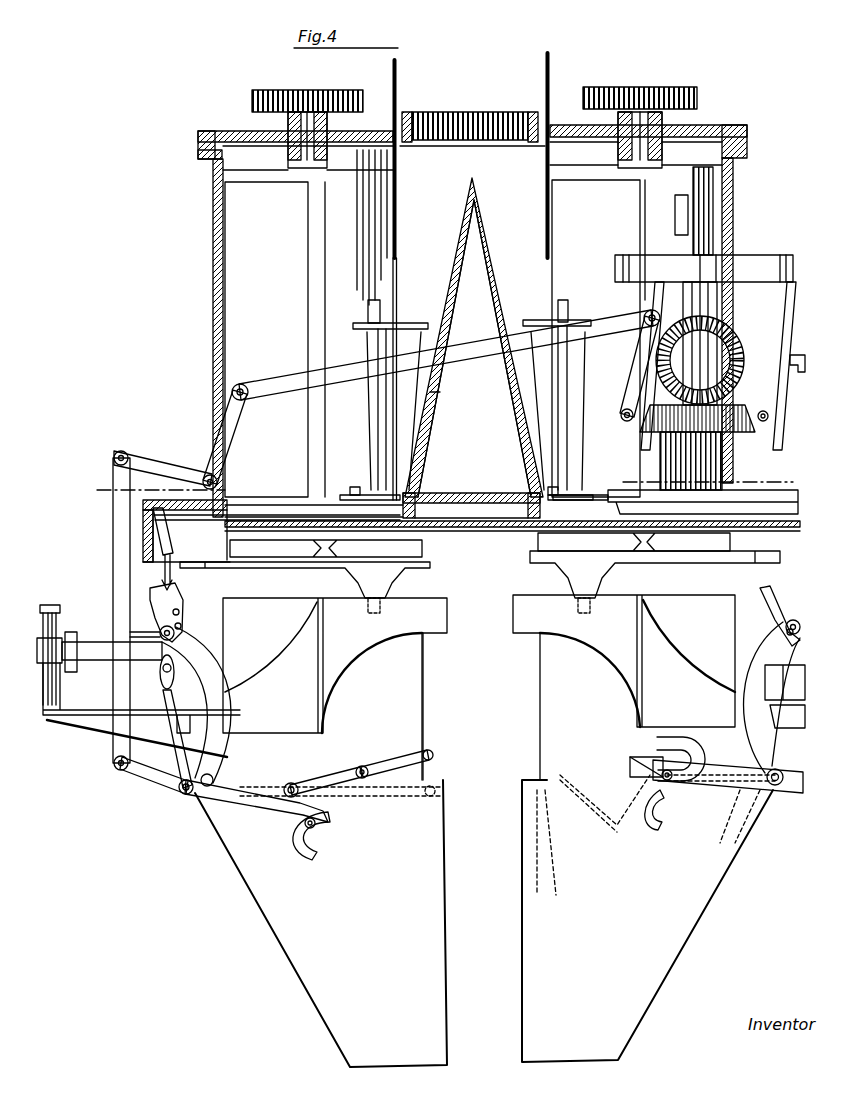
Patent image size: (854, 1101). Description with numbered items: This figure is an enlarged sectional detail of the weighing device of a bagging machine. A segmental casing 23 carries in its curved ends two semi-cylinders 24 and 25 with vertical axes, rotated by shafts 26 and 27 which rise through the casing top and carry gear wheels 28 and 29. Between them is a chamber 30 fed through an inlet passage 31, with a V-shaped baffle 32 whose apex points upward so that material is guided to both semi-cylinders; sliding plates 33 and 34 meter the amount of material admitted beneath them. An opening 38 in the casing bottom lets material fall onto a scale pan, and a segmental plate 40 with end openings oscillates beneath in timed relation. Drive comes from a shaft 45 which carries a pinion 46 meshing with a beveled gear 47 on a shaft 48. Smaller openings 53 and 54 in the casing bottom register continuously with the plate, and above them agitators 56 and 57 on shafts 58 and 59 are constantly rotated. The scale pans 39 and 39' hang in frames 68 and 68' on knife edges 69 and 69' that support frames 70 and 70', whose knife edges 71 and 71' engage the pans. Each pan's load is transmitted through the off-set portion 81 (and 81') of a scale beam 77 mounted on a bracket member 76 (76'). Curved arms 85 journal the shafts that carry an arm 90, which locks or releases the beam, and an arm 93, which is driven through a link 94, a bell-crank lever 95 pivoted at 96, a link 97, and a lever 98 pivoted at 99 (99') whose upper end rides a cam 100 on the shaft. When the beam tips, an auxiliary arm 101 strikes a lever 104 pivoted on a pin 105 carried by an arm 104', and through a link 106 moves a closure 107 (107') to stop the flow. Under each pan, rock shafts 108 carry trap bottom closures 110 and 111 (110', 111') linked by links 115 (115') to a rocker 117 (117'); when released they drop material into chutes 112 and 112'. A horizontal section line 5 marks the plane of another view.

The base plate 5 is at (105, 492).
The segmental casing 23 is at (212, 285).
The semi-cylinder 24 is at (690, 190).
The semi-cylinder 25 is at (320, 278).
The shaft 26 is at (660, 122).
The shaft 27 is at (300, 130).
The gear wheel 28 is at (650, 90).
The gear wheel 29 is at (322, 85).
The chamber 30 is at (474, 332).
The inlet passage 31 is at (470, 120).
The V-shaped or conical baffle 32 is at (487, 262).
The sliding plate 33 is at (550, 66).
The sliding plate 34 is at (397, 80).
The opening 38 is at (290, 500).
The scale pan 39 is at (335, 686).
The scale pan 39' is at (624, 687).
The segmental plate 40 is at (486, 528).
The shaft 45 is at (715, 208).
The pinion 46 is at (745, 415).
The beveled gear 47 is at (745, 350).
The shaft 48 is at (803, 365).
The opening 53 is at (570, 493).
The opening 54 is at (415, 492).
The agitator 56 is at (578, 360).
The agitator 57 is at (420, 392).
The shaft 58 is at (560, 318).
The shaft 59 is at (385, 312).
The frame 68 is at (323, 667).
The frame 68' is at (637, 663).
The knife edge 69 is at (360, 616).
The knife edge 69' is at (603, 592).
The frame 70 is at (305, 580).
The frame 70' is at (655, 574).
The knife edge 71 is at (326, 550).
The knife edge 71' is at (634, 543).
The bracket member 76 is at (141, 712).
The bracket member 76' is at (792, 713).
The scale beam 77 is at (88, 648).
The off-set portion 81 is at (194, 620).
The off-set portion 81' is at (792, 616).
The curved arm 85 is at (745, 697).
The arm 90 is at (190, 732).
The arm 93 is at (153, 786).
The link 94 is at (113, 548).
The bell-crank lever 95 is at (150, 462).
The pivot 96 is at (208, 472).
The link 97 is at (470, 345).
The lever 98 is at (640, 370).
The pivot 99 is at (611, 427).
The pivot 99' is at (789, 421).
The cam 100 is at (745, 265).
The auxiliary arm 101 is at (160, 608).
The lever 104 is at (186, 531).
The arm 104' is at (96, 555).
The pin 105 is at (175, 553).
The link 106 is at (277, 506).
The closure 107 is at (370, 485).
The closure 107' is at (573, 523).
The rock shaft 108 is at (440, 790).
The trap bottom closure 110 is at (340, 802).
The trap bottom closure 110' is at (728, 808).
The trap bottom closure 111 is at (257, 820).
The trap bottom closure 111' is at (600, 835).
The chute 112 is at (321, 923).
The chute 112' is at (647, 921).
The link 115 is at (394, 757).
The link 115' is at (662, 755).
The rocker 117 is at (323, 773).
The rocker 117' is at (625, 767).